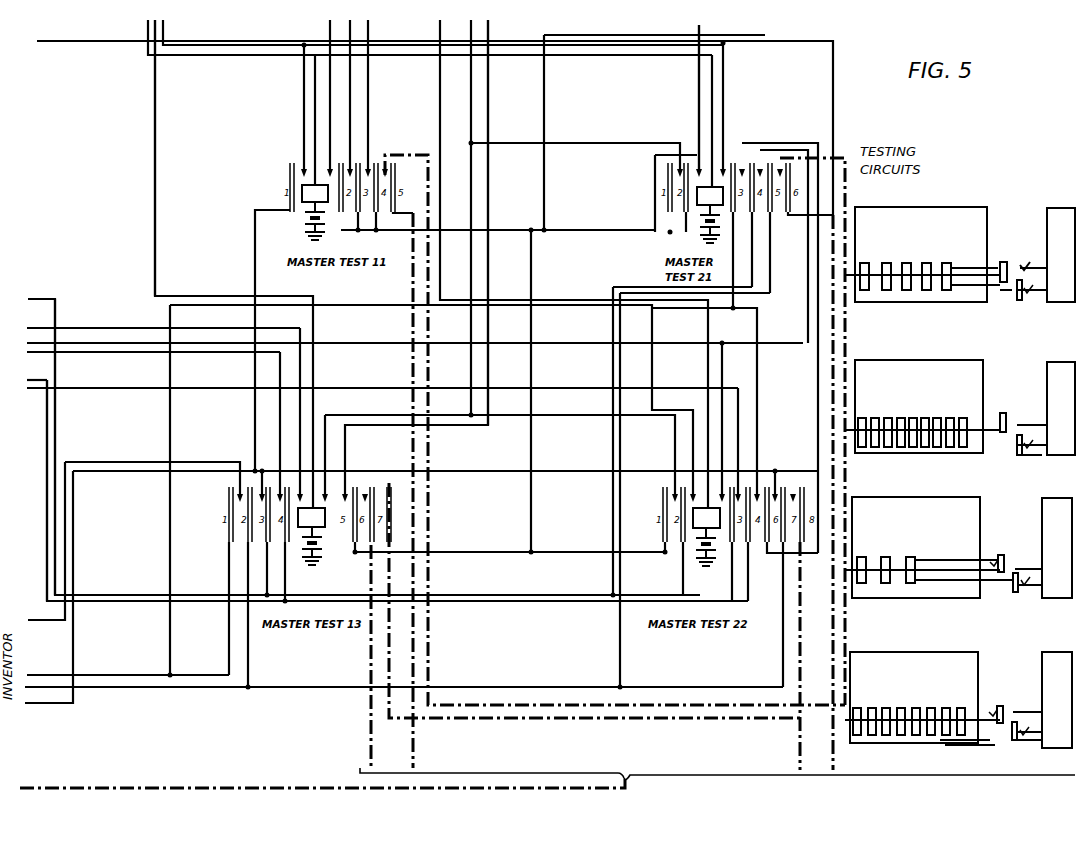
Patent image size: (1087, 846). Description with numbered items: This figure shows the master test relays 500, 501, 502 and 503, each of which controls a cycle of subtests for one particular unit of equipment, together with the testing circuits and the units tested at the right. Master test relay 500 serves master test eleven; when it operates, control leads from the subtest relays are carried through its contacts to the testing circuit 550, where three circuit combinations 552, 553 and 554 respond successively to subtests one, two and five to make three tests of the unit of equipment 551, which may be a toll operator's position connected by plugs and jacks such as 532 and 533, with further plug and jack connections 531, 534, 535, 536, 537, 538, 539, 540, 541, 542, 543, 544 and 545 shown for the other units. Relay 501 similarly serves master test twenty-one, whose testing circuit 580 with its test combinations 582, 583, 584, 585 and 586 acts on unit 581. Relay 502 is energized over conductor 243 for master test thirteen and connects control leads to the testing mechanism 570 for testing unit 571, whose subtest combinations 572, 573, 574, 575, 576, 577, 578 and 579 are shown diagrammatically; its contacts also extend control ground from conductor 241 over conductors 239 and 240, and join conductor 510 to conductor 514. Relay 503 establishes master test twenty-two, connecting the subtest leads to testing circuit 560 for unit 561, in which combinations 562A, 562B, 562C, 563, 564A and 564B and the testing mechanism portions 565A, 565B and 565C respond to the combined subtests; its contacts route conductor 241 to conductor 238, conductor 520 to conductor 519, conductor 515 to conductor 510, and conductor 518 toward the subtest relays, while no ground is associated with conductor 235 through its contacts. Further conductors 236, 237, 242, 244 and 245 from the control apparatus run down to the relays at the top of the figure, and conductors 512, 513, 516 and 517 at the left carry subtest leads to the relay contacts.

The conductor 235 is at (328, 84).
The conductor 236 is at (351, 88).
The conductor 237 is at (369, 108).
The conductor 238 is at (698, 90).
The conductor 239 is at (470, 70).
The conductor 240 is at (489, 88).
The conductor 241 is at (765, 30).
The conductor 242 is at (208, 56).
The conductor 243 is at (157, 90).
The conductor 244 is at (206, 45).
The conductor 245 is at (439, 133).
The master test relay 500 is at (305, 209).
The master test 21 relay coil 501 is at (700, 212).
The master test relay 502 is at (320, 535).
The master test relay 503 is at (694, 536).
The conductor 510 is at (38, 298).
The conductor 512 is at (74, 327).
The conductor 513 is at (76, 343).
The conductor 514 is at (78, 354).
The conductor 515 is at (78, 390).
The conductor 516 is at (49, 430).
The conductor 517 is at (29, 622).
The conductor 518 is at (28, 674).
The conductor 519 is at (89, 689).
The conductor 520 is at (47, 705).
The contact 531 is at (1026, 278).
The plug and jack 532 is at (1003, 296).
The plug and jack 533 is at (997, 262).
The conductor 534 is at (1025, 456).
The conductor 535 is at (1020, 424).
The contact 536 is at (1016, 444).
The contact 537 is at (998, 412).
The contact 538 is at (1018, 594).
The conductor 539 is at (1020, 568).
The conductor 540 is at (1000, 590).
The contact 541 is at (995, 556).
The conductor 542 is at (1026, 748).
The conductor 543 is at (1016, 711).
The contact 544 is at (1010, 740).
The contact 545 is at (995, 707).
The testing circuit 550 is at (982, 524).
The unit of equipment 551 is at (1030, 540).
The testing equipment combination 552 is at (861, 583).
The testing equipment combination 553 is at (885, 583).
The testing equipment combination 554 is at (910, 583).
The testing circuit 560 is at (983, 362).
The unit 561 is at (1030, 400).
The sub test 562A is at (862, 447).
The sub test 562B is at (875, 447).
The sub test 562C is at (888, 447).
The sub test 563 is at (901, 447).
The sub test 564A is at (913, 447).
The sub test 564B is at (925, 447).
The testing mechanism 565A is at (937, 418).
The testing mechanism 565B is at (950, 418).
The testing mechanism 565C is at (963, 418).
The testing mechanism 570 is at (980, 678).
The unit 571 is at (1030, 698).
The sub test 1 572 is at (857, 735).
The sub test 2 573 is at (872, 735).
The sub test 3 574 is at (886, 735).
The sub test 4 575 is at (901, 735).
The sub test 5 576 is at (916, 708).
The sub test 6 577 is at (931, 735).
The sub test 7 578 is at (946, 735).
The sub test 8 579 is at (961, 735).
The master test 21 sub tests block 580 is at (985, 208).
The unit tested 581 is at (1030, 248).
The sub test 1 582 is at (862, 290).
The sub test 2 583 is at (886, 290).
The sub test 3 584 is at (905, 290).
The sub test 4 585 is at (926, 290).
The sub test 5 586 is at (946, 290).